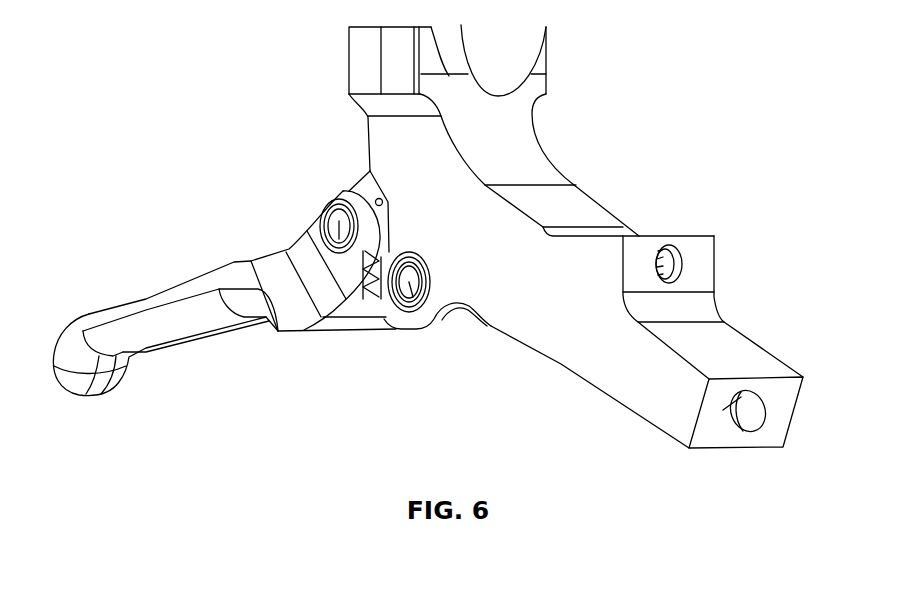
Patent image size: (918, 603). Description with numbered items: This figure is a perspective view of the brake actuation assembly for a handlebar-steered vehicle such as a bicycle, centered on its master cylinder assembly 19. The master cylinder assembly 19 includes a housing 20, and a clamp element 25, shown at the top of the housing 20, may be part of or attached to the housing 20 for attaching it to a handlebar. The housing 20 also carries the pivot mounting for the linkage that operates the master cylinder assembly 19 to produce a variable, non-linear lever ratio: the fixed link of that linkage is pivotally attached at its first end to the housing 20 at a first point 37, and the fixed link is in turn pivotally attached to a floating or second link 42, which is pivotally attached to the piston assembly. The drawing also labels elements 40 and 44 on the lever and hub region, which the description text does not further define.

The master cylinder assembly 19 is at (428, 236).
The housing 20 is at (563, 271).
The clamp element 25 is at (540, 57).
The first point 37 is at (412, 298).
The pivot bearing 40 is at (338, 240).
The floating link 42 is at (351, 249).
The lever arm 44 is at (226, 256).